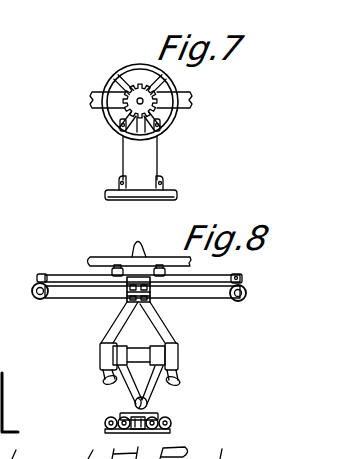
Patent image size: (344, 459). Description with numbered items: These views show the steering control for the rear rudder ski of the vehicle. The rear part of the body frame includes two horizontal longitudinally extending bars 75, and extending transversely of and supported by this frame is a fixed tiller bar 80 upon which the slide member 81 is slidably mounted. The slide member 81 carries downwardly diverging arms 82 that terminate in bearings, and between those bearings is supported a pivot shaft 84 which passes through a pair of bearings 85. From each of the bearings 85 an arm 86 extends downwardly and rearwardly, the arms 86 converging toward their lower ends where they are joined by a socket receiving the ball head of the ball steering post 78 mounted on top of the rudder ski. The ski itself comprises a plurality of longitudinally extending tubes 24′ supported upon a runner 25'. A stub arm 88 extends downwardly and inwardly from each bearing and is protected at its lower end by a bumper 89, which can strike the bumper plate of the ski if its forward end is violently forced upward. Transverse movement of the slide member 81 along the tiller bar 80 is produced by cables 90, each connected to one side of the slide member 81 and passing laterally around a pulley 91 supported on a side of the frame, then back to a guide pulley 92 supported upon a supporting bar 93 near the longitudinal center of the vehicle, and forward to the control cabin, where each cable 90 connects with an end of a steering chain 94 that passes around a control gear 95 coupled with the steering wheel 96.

In FIG. 7, the steering wheel 96 is at (117, 72).
In FIG. 7, the control gear 95 is at (165, 97).
In FIG. 7, the steering chain 94 is at (161, 125).
In FIG. 7, the cables 90 is at (121, 152).
In FIG. 8, the cables 90 is at (57, 274).
In FIG. 8, the tiller bar 80 is at (72, 293).
In FIG. 8, the horizontal longitudinally extending bars 75 is at (36, 297).
In FIG. 8, the pulley 91 is at (243, 279).
In FIG. 8, the guide pulley 92 is at (138, 250).
In FIG. 8, the supporting bar 93 is at (158, 266).
In FIG. 8, the slide member 81 is at (154, 298).
In FIG. 8, the downwardly diverging arms 82 is at (110, 327).
In FIG. 8, the bearings 85 is at (101, 357).
In FIG. 8, the pivot shaft 84 is at (142, 350).
In FIG. 8, the bumper 89 is at (104, 379).
In FIG. 8, the stub arm 88 is at (177, 371).
In FIG. 8, the arms 86 is at (121, 392).
In FIG. 8, the ball steering post 78 is at (149, 403).
In FIG. 8, the longitudinally extending tubes 24′ is at (160, 417).
In FIG. 8, the runner 25' is at (172, 431).